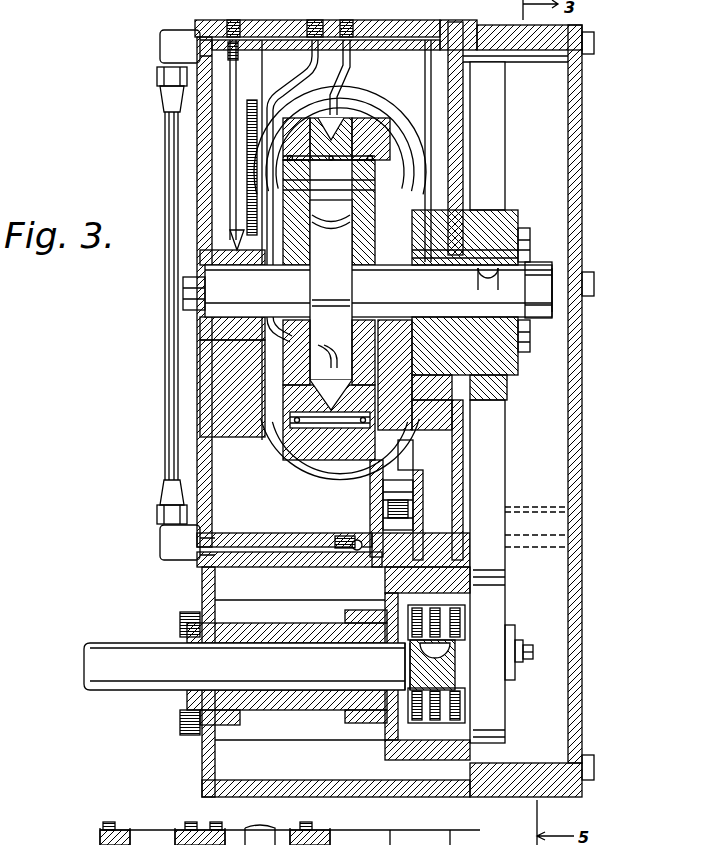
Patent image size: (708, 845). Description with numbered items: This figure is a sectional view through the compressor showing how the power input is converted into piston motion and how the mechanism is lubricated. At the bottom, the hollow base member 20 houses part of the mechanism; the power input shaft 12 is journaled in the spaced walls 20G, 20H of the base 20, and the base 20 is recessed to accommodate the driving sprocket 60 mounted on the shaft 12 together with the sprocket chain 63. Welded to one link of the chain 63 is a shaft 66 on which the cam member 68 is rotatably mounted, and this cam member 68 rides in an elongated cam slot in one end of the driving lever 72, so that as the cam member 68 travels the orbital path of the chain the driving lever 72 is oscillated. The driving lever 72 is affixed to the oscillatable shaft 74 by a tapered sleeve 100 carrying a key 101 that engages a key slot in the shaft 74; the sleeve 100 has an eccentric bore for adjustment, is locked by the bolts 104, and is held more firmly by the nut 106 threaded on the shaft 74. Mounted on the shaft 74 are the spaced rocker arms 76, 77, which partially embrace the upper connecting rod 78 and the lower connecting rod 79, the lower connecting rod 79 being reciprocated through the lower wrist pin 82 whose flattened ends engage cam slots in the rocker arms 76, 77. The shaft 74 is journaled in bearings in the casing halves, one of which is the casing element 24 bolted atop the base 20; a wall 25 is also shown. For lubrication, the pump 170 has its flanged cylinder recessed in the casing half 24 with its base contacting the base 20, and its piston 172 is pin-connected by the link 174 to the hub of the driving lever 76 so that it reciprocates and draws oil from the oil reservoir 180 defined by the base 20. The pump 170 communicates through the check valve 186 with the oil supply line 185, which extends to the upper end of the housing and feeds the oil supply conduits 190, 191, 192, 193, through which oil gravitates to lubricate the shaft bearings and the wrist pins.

The power input shaft 12 is at (122, 657).
The base member 20 is at (205, 762).
The spaced wall 20G is at (203, 597).
The spaced wall 20H is at (385, 605).
The casing element 24 is at (462, 138).
The housing wall 25 is at (203, 157).
The driving sprocket 60 is at (455, 692).
The sprocket chain 63 is at (465, 616).
The shaft 66 is at (534, 651).
The cam member 68 is at (515, 634).
The driving lever 72 is at (490, 441).
The oscillatable shaft 74 is at (212, 304).
The rocker arm 76 is at (393, 252).
The rocker arm 77 is at (297, 255).
The upper connecting rod 78 is at (345, 118).
The lower connecting rod 79 is at (322, 432).
The lower wrist pin 82 is at (240, 438).
The tapered sleeve 100 is at (502, 232).
The key 101 is at (488, 272).
The bolts 104 is at (522, 235).
The nut 106 is at (542, 266).
The pump 170 is at (413, 507).
The piston 172 is at (413, 466).
The link 174 is at (397, 433).
The oil reservoir 180 is at (217, 742).
The oil supply line 185 is at (173, 462).
The check valve 186 is at (357, 552).
The oil supply conduit 190 is at (235, 130).
The oil supply conduit 191 is at (283, 82).
The oil supply conduit 192 is at (345, 45).
The oil supply conduit 193 is at (428, 92).